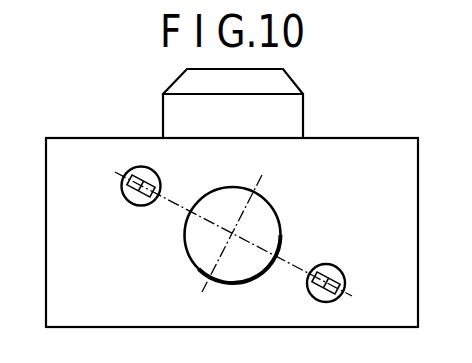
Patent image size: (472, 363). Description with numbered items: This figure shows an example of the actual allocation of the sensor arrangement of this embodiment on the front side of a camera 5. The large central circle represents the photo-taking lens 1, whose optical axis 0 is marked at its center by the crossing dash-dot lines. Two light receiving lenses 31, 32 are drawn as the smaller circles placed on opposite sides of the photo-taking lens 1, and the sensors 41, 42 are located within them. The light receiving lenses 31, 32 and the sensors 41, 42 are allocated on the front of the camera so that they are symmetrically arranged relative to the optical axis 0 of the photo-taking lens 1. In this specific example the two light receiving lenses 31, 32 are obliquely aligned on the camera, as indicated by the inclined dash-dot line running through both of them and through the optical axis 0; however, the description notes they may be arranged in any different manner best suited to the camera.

The camera housing 5 is at (359, 141).
The photo-taking lens 1 is at (272, 226).
The optical axis 0 is at (232, 232).
The light receiving lens 31 is at (158, 167).
The light receiving lens 32 is at (333, 264).
The sensor 41 is at (125, 191).
The sensor 42 is at (307, 295).